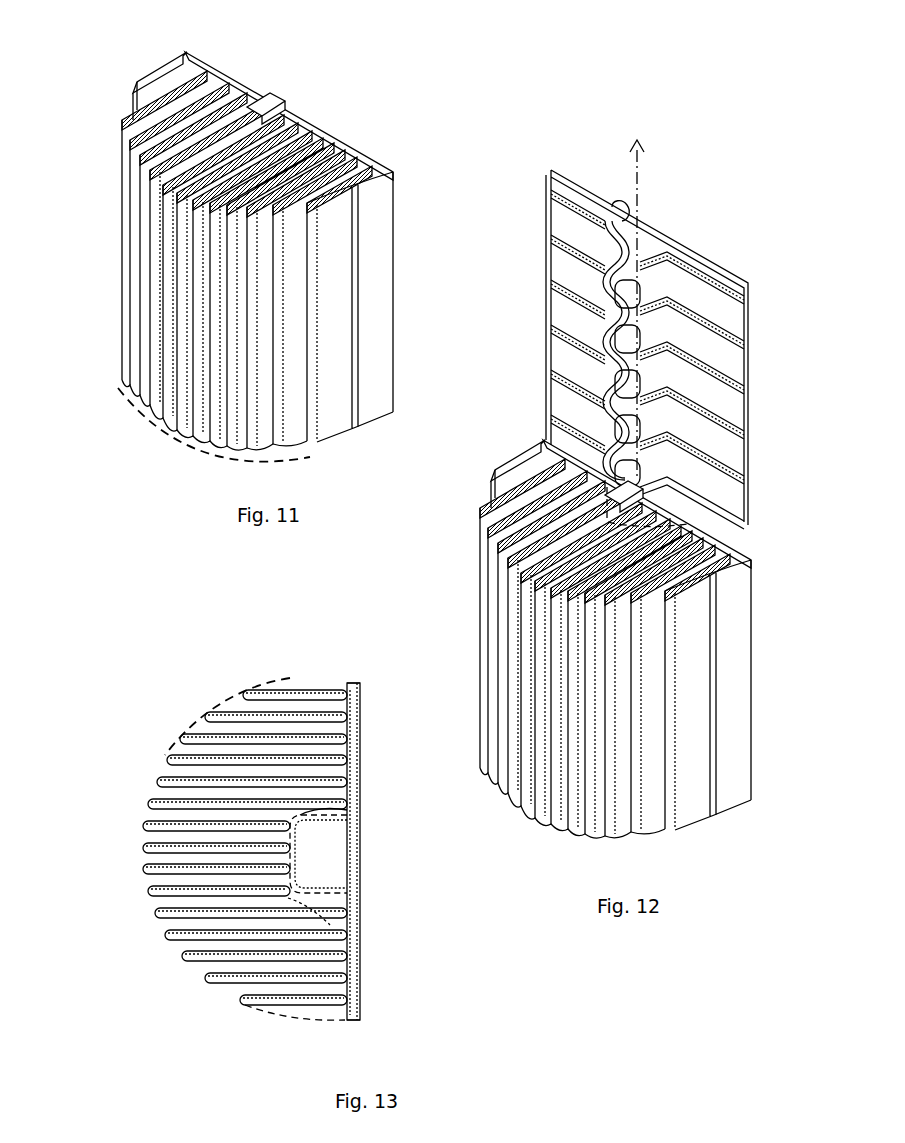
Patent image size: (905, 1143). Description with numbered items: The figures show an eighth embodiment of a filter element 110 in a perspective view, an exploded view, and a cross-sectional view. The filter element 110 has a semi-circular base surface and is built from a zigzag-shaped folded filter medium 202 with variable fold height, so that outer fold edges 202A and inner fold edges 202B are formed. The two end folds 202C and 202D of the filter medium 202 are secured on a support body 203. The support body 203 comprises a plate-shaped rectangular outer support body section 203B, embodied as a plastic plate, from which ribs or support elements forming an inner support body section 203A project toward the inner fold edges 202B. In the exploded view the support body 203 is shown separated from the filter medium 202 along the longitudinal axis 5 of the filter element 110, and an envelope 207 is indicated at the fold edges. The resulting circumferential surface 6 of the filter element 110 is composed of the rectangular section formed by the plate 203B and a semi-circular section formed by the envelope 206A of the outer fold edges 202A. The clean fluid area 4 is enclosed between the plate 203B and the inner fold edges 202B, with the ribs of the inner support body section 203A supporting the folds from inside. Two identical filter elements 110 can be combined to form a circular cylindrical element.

In FIG. 11, the filter element 110 is at (70, 82).
In FIG. 12, the filter medium 202 is at (467, 565).
In FIG. 11, the outer fold edge 202A is at (145, 178).
In FIG. 12, the outer fold edge 202A is at (615, 659).
In FIG. 13, the outer fold edge 202A is at (147, 845).
In FIG. 11, the inner fold edge 202B is at (265, 135).
In FIG. 12, the inner fold edge 202B is at (707, 514).
In FIG. 13, the inner fold edge 202B is at (332, 923).
In FIG. 11, the end fold 202C is at (200, 35).
In FIG. 12, the end fold 202C is at (484, 474).
In FIG. 13, the end fold 202C is at (342, 683).
In FIG. 11, the end fold 202D is at (375, 192).
In FIG. 12, the end fold 202D is at (758, 695).
In FIG. 13, the end fold 202D is at (345, 1020).
In FIG. 12, the support body 203 is at (728, 221).
In FIG. 12, the inner support body section 203A is at (598, 340).
In FIG. 13, the inner support body section 203A is at (333, 798).
In FIG. 12, the outer support body section 203B is at (640, 222).
In FIG. 13, the outer support body section 203B is at (357, 965).
In FIG. 11, the envelope 206A is at (150, 430).
In FIG. 13, the envelope 206A is at (205, 713).
In FIG. 12, the envelope 207 is at (647, 507).
In FIG. 13, the clean fluid area 4 is at (335, 848).
In FIG. 12, the longitudinal axis 5 is at (632, 182).
In FIG. 13, the circumferential surface 6 is at (368, 718).